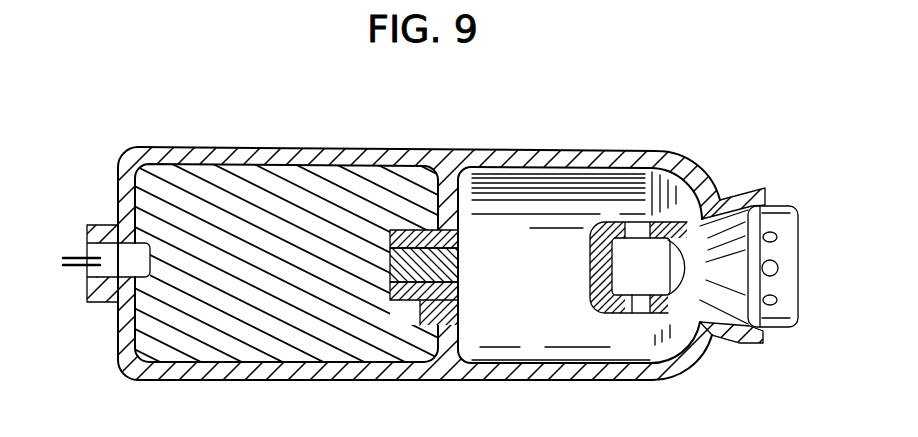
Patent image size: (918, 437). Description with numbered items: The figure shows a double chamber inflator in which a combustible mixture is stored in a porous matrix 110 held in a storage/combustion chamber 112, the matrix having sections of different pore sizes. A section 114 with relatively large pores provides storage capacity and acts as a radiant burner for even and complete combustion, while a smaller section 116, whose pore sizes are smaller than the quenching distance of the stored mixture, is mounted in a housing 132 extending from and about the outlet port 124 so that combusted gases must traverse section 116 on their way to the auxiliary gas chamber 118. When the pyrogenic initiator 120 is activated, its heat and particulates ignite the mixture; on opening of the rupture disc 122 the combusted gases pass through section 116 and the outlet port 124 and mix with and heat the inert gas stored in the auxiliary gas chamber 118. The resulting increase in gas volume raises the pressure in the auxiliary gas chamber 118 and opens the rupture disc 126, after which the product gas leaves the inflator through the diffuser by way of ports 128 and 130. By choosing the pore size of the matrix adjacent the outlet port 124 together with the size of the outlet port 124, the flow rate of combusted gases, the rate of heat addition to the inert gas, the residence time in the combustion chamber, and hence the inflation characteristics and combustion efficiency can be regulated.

The porous matrix 110 is at (296, 307).
The storage/combustion chamber 112 is at (372, 310).
The section 114 is at (225, 288).
The section 116 is at (460, 248).
The auxiliary gas chamber 118 is at (580, 265).
The pyrogenic initiator 120 is at (112, 268).
The rupture disc 122 is at (458, 255).
The outlet port 124 is at (401, 300).
The rupture disc 126 is at (695, 256).
The port 128 is at (638, 297).
The port 130 is at (776, 301).
The housing 132 is at (445, 322).